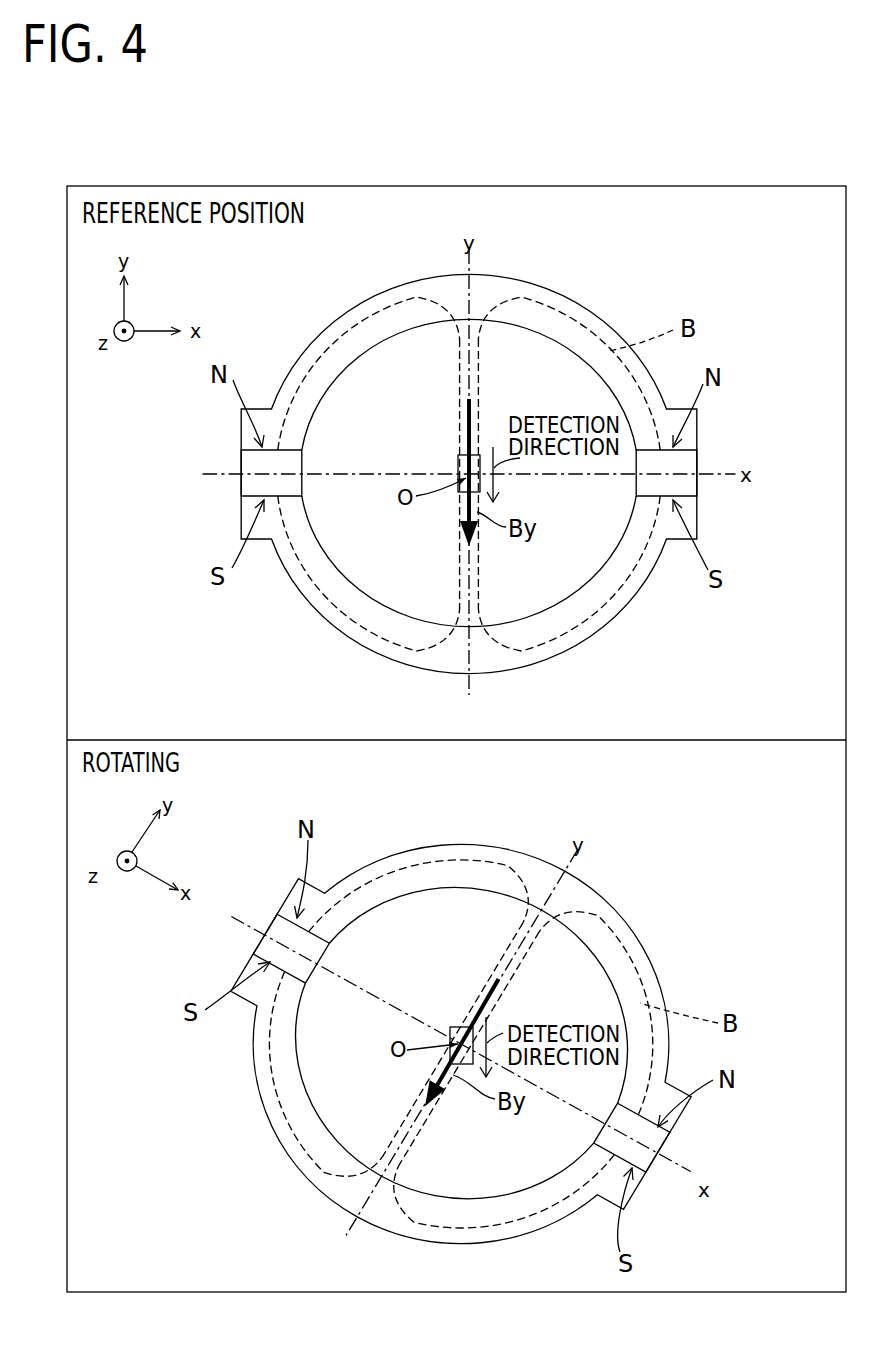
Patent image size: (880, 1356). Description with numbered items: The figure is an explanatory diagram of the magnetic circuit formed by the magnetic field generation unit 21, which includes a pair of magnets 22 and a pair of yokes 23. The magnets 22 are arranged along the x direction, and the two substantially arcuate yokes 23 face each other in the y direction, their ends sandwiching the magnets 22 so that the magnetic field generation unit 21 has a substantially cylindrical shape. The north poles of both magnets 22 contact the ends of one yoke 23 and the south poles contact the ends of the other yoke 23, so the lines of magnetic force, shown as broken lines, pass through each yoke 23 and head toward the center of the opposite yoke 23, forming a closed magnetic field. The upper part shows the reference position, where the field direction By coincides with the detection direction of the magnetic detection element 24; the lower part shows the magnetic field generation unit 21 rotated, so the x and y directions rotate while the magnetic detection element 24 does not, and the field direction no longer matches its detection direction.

The magnetic field generation unit 21 is at (485, 780).
The magnet 22 is at (240, 488).
The yoke 23 is at (334, 328).
The magnetic detection element 24 is at (458, 456).